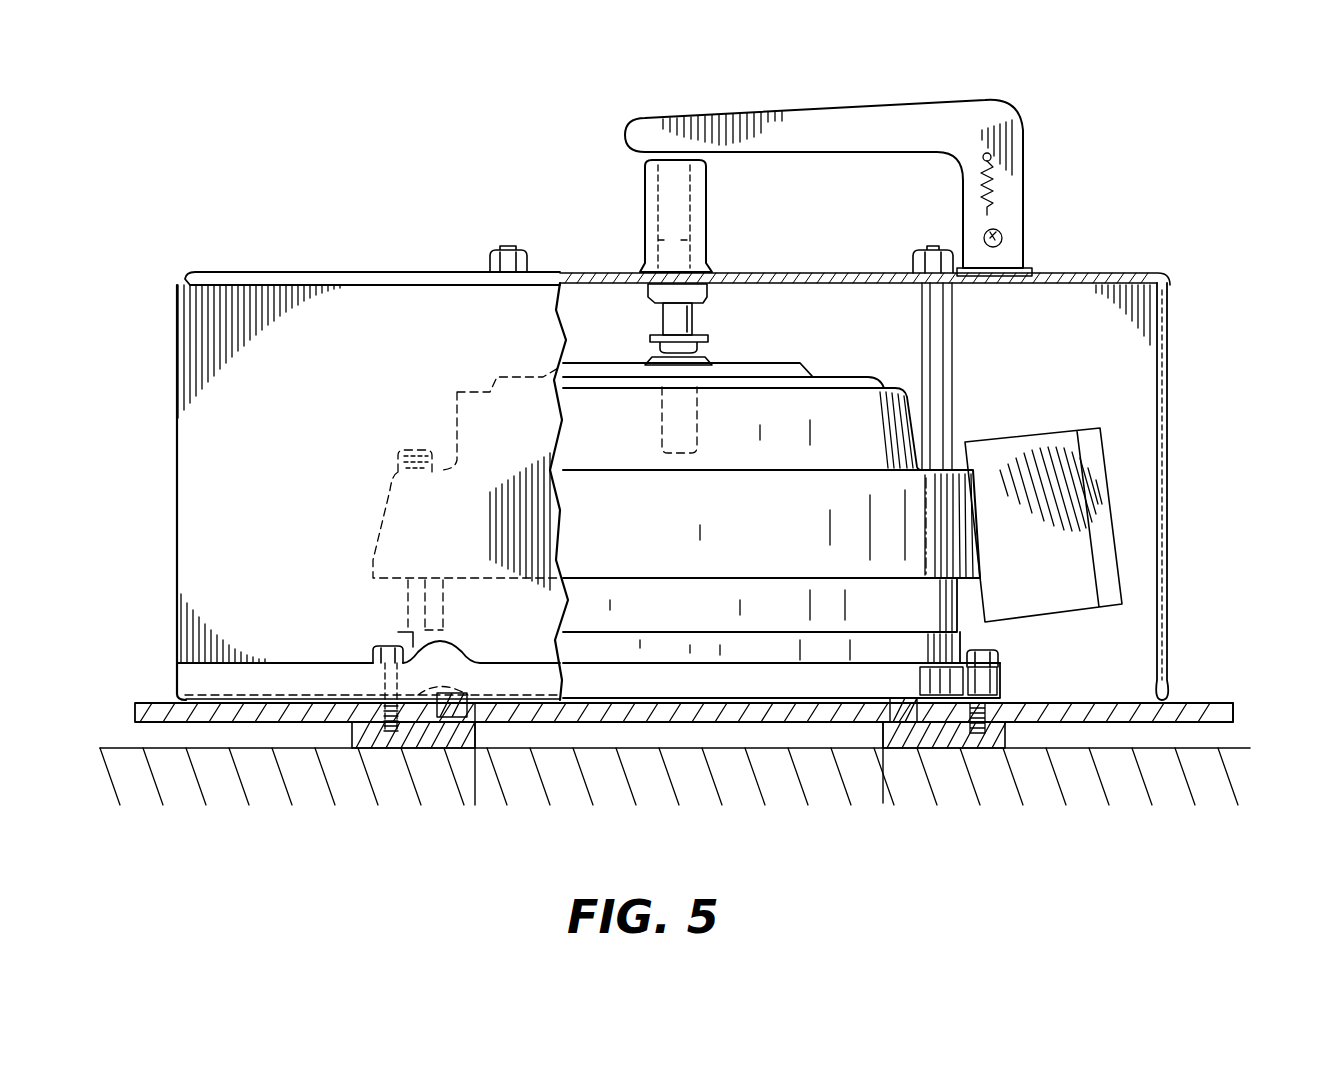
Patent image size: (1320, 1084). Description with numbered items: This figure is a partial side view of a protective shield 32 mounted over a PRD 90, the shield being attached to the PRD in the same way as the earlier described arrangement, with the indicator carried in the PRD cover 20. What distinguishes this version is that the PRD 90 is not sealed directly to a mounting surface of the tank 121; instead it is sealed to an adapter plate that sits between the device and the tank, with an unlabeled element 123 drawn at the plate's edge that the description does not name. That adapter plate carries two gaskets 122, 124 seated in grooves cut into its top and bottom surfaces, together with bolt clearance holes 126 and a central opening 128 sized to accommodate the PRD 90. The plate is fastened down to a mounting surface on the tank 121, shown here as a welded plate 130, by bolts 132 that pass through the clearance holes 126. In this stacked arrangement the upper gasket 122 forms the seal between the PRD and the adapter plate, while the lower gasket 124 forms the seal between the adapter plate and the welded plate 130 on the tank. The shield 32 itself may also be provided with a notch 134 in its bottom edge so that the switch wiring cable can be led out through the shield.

The cover 20 is at (788, 345).
The protective shield 32 is at (1182, 498).
The PRD 90 is at (457, 392).
The tank 121 is at (1247, 772).
The gasket 122 is at (893, 685).
The mounting plate end 123 is at (1187, 700).
The gasket 124 is at (918, 740).
The bolt clearance holes 126 is at (372, 685).
The opening 128 is at (677, 715).
The welded plate 130 is at (963, 745).
The bolts 132 is at (390, 647).
The notch 134 is at (463, 693).